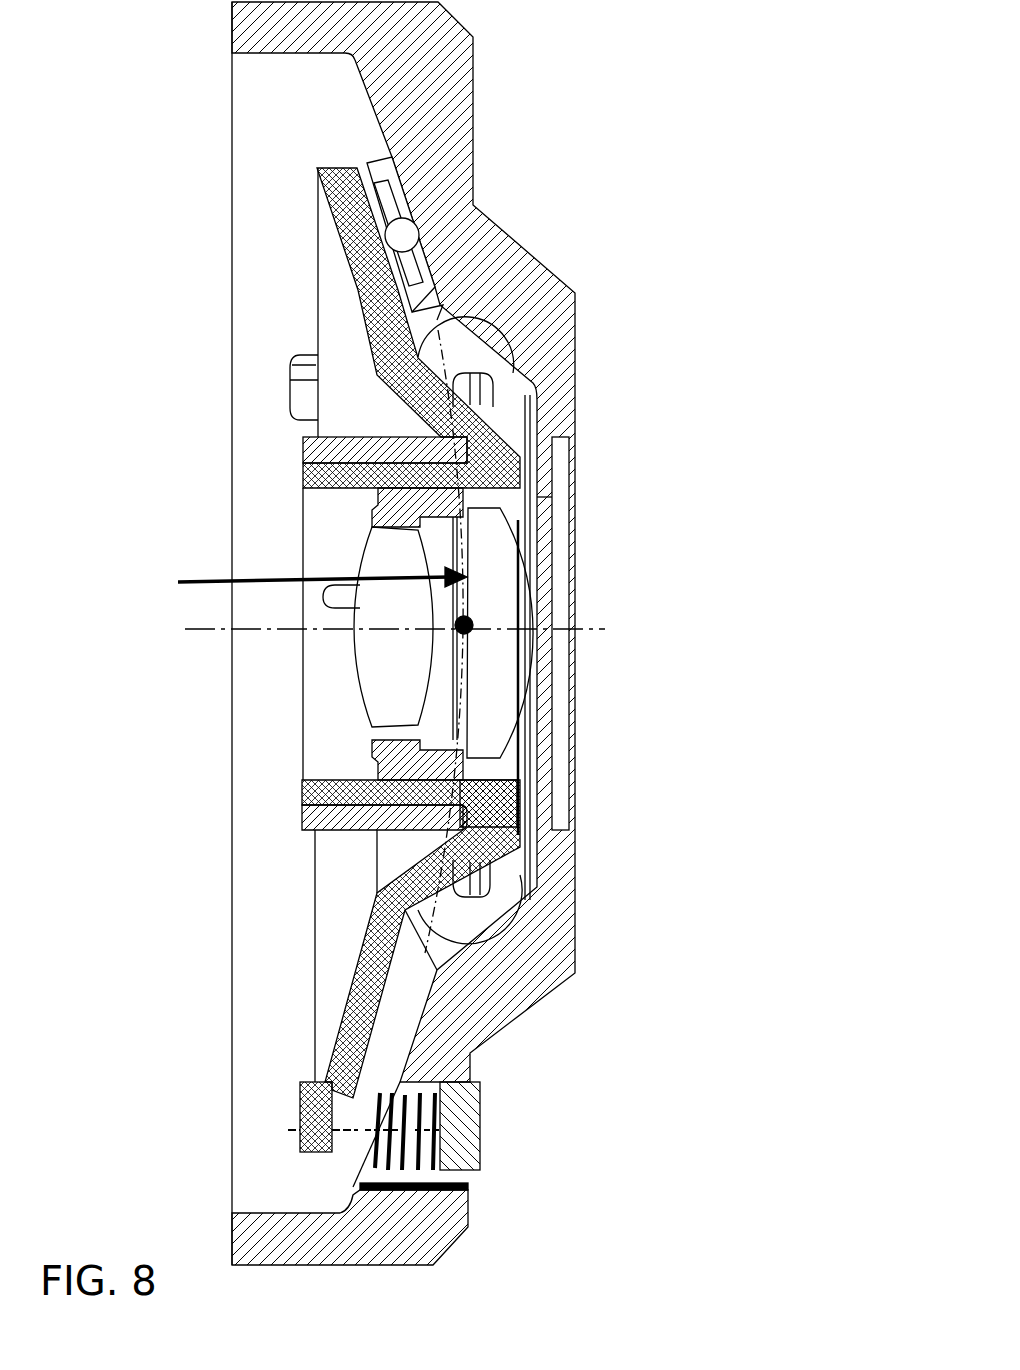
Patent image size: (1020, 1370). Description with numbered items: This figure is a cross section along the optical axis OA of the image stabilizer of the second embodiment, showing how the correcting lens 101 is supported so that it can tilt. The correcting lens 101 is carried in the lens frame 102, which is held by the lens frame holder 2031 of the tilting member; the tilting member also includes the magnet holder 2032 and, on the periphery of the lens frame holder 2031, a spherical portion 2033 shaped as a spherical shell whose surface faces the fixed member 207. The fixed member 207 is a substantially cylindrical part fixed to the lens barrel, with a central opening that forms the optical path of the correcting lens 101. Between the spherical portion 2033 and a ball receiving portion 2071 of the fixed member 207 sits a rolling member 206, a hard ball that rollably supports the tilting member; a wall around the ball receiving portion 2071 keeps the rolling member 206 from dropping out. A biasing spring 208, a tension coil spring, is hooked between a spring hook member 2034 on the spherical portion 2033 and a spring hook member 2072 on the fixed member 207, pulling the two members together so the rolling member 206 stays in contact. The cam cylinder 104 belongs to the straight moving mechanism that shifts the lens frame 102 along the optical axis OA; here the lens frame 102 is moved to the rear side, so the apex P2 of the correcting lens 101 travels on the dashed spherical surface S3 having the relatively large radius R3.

The spherical portion 2033 is at (330, 100).
The rolling member 206 is at (400, 237).
The ball receiving portion 2071 is at (432, 258).
The cam cylinder 104 is at (305, 448).
The spherical surface S3 is at (455, 497).
The radius R3 is at (322, 570).
The correcting lens 101 is at (495, 565).
The apex P2 is at (470, 620).
The optical axis OA is at (200, 632).
The lens frame holder 2031 is at (305, 790).
The lens frame 102 is at (485, 768).
The magnet holder 2032 is at (468, 832).
The fixed member 207 is at (505, 1012).
The spring hook member 2072 is at (466, 1121).
The spring hook member 2034 is at (300, 1102).
The biasing spring 208 is at (415, 1133).